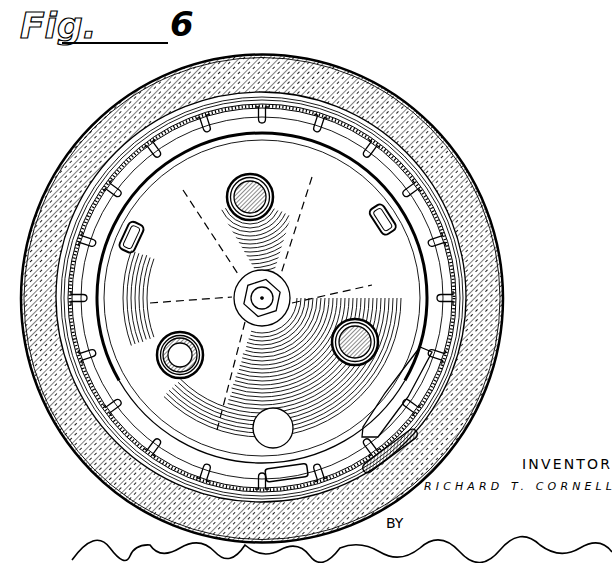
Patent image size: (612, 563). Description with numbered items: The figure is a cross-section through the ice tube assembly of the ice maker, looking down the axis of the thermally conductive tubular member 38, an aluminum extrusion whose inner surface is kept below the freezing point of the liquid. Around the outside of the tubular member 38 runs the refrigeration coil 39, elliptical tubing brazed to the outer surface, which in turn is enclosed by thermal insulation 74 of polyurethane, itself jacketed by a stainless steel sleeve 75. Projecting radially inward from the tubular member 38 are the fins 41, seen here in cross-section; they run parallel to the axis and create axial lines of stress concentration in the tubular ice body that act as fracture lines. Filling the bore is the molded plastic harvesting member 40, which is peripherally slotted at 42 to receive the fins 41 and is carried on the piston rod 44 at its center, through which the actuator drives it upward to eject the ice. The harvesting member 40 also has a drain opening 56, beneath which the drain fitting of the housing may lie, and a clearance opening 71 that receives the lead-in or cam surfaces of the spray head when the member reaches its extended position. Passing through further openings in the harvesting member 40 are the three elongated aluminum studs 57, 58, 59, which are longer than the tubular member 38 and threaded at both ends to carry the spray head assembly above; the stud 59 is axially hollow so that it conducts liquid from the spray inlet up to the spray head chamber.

The thermal insulation 74 is at (90, 156).
The sleeve 75 is at (455, 182).
The refrigeration coil 39 is at (455, 248).
The tubular member 38 is at (466, 281).
The harvesting member 40 is at (435, 332).
The fins 41 is at (384, 394).
The peripheral slots 42 is at (296, 470).
The piston rod 44 is at (277, 290).
The drain opening 56 is at (262, 437).
The stud 57 is at (258, 197).
The stud 58 is at (366, 341).
The stud 59 is at (190, 347).
The clearance opening 71 is at (142, 231).